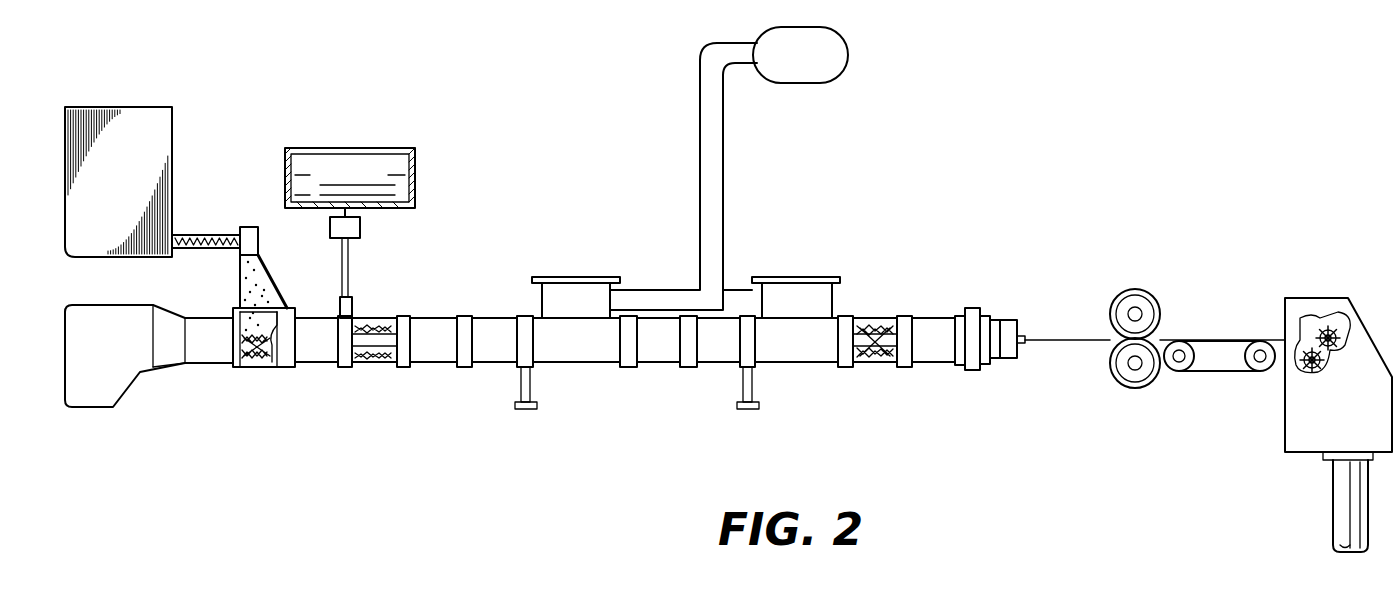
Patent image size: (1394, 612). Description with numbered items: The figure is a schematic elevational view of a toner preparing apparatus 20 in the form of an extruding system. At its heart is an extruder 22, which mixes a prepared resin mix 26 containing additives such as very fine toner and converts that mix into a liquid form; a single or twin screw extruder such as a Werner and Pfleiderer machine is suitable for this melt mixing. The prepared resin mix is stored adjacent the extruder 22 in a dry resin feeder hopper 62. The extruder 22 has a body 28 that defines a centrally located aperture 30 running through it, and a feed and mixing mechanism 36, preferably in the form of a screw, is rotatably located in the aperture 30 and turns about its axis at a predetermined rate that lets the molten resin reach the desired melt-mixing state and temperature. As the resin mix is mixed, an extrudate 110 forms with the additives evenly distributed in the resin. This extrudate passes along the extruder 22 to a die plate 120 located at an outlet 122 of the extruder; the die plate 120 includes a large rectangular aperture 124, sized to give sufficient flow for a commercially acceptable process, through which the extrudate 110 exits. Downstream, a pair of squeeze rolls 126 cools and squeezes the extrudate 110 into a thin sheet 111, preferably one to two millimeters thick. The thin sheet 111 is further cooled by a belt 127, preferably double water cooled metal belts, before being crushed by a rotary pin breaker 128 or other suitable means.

The toner preparing apparatus 20 is at (416, 77).
The extruder 22 is at (965, 123).
The prepared resin mix 26 is at (240, 278).
The body 28 is at (490, 318).
The aperture 30 is at (369, 365).
The feed and mixing mechanism 36 is at (372, 327).
The dry resin feeder hopper 62 is at (163, 128).
The extrudate 110 is at (1057, 338).
The thin sheet 111 is at (1213, 339).
The die plate 120 is at (1008, 319).
The outlet 122 is at (995, 319).
The aperture 124 is at (1028, 341).
The squeeze rolls 126 is at (1113, 340).
The belt 127 is at (1215, 372).
The rotary pin breaker 128 is at (1285, 425).